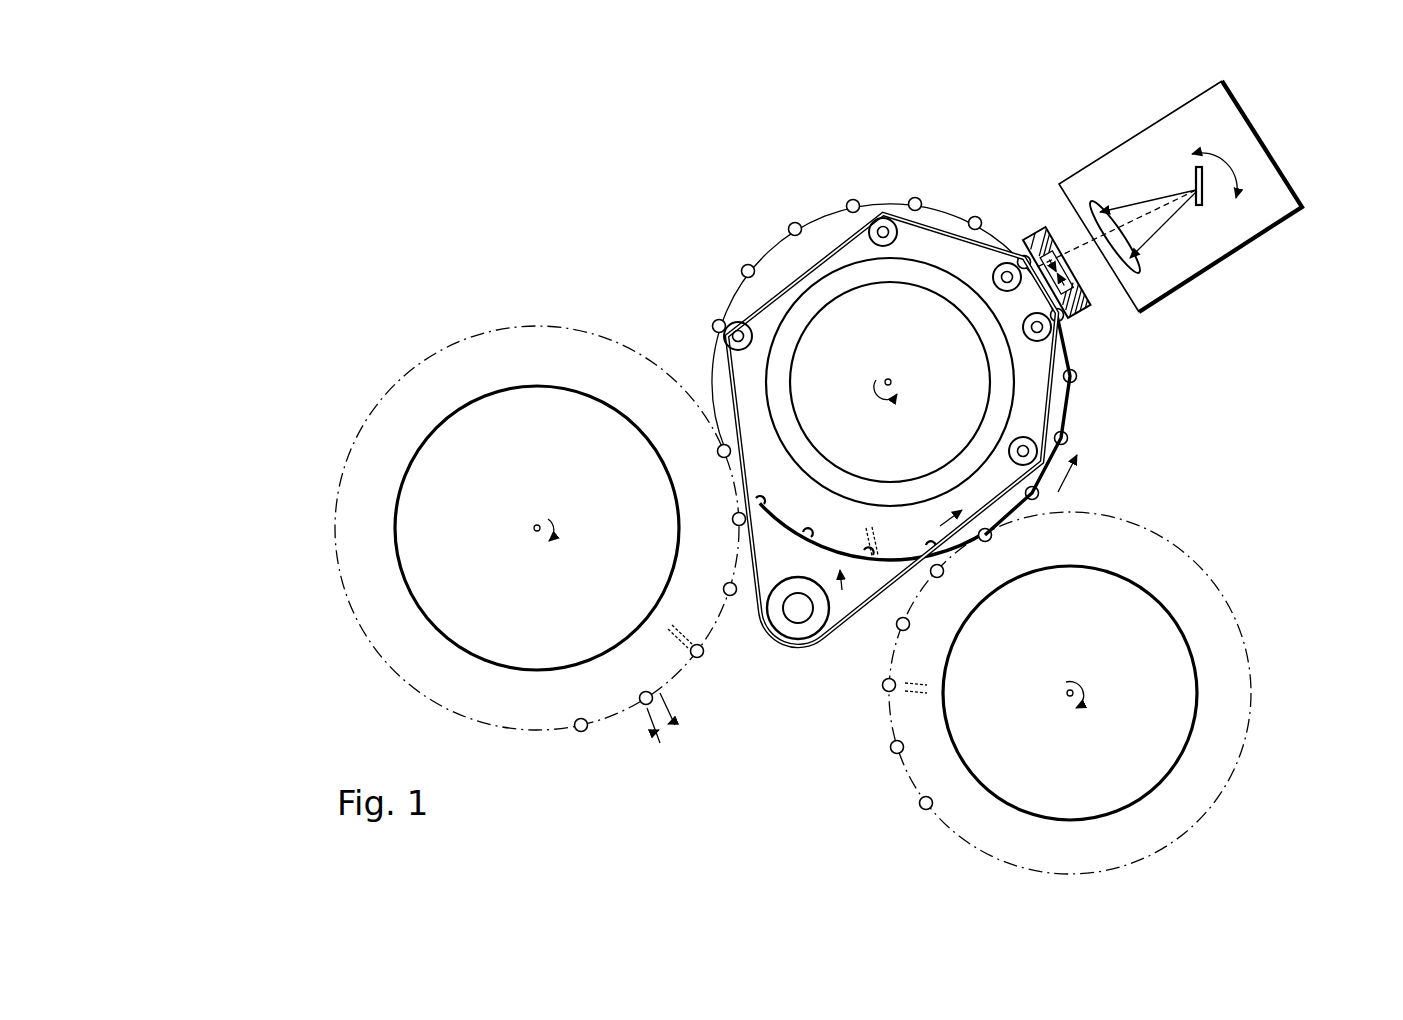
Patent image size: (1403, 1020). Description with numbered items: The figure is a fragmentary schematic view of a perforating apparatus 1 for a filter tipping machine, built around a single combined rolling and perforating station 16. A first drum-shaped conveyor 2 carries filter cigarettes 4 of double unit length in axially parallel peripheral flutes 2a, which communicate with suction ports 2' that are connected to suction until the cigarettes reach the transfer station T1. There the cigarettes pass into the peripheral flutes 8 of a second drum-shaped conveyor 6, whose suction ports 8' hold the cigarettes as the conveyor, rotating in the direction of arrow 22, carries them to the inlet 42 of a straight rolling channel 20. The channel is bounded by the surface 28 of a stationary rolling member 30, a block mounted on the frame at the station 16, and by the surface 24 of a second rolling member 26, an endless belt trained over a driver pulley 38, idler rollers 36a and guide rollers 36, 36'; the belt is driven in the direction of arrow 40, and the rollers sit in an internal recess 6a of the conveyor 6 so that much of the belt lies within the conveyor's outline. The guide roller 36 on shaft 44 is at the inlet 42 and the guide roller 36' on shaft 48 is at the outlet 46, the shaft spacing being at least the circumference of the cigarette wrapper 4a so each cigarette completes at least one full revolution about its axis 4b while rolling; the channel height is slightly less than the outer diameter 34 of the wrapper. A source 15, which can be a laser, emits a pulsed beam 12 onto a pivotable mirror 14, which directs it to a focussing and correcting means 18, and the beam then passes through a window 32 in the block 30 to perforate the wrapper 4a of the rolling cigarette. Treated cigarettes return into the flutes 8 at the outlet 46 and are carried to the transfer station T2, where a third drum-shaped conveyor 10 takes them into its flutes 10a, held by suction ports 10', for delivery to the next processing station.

The perforating apparatus 1 is at (730, 175).
The first rotary conveyor 2 is at (1070, 681).
The suction ports 2' is at (883, 709).
The peripheral flutes 2a is at (922, 806).
The filter cigarettes 4 is at (896, 749).
The wrapper 4a is at (990, 548).
The cigarette axis 4b is at (1045, 500).
The second rotary conveyor 6 is at (847, 622).
The internal recess 6a is at (1058, 417).
The peripheral flutes 8 is at (873, 480).
The suction ports 8' is at (806, 222).
The third rotary conveyor 10 is at (537, 562).
The suction ports 10' is at (702, 683).
The flutes 10a is at (583, 733).
The pulsed beam 12 is at (1162, 220).
The pivotable mirror 14 is at (1195, 178).
The radiation source 15 is at (1275, 140).
The combined rolling and perforating station 16 is at (1090, 277).
The focussing and correcting means 18 is at (1140, 258).
The rolling channel 20 is at (1035, 247).
The arrow 22 is at (1060, 492).
The rolling surface 24 is at (1086, 318).
The rolling member 26 is at (790, 278).
The rolling surface 28 is at (863, 537).
The stationary rolling member 30 is at (1020, 250).
The window 32 is at (1057, 273).
The outer diameter 34 is at (652, 735).
The guide roller 36 is at (1076, 353).
The guide roller 36' is at (875, 171).
The idler rollers 36a is at (737, 323).
The driver pulley 38 is at (786, 628).
The arrow 40 is at (842, 590).
The inlet 42 is at (1068, 327).
The shaft 44 is at (1060, 355).
The outlet 46 is at (1010, 256).
The shaft 48 is at (992, 268).
The transfer station T1 is at (998, 545).
The transfer station T2 is at (713, 446).